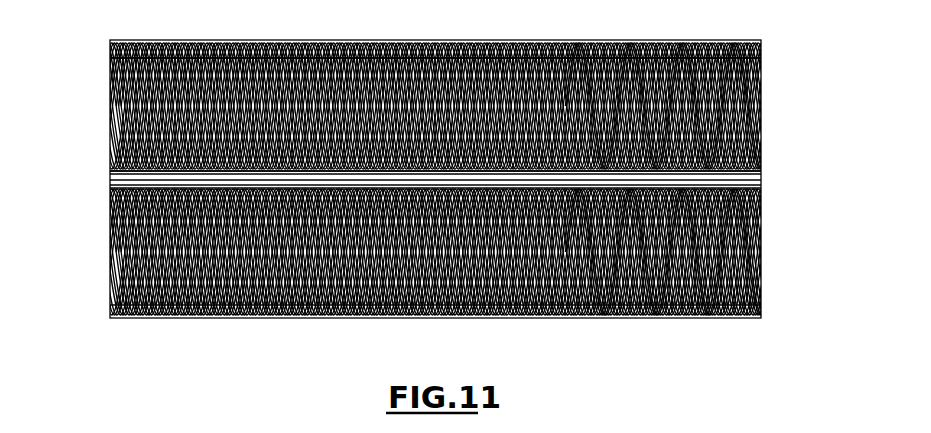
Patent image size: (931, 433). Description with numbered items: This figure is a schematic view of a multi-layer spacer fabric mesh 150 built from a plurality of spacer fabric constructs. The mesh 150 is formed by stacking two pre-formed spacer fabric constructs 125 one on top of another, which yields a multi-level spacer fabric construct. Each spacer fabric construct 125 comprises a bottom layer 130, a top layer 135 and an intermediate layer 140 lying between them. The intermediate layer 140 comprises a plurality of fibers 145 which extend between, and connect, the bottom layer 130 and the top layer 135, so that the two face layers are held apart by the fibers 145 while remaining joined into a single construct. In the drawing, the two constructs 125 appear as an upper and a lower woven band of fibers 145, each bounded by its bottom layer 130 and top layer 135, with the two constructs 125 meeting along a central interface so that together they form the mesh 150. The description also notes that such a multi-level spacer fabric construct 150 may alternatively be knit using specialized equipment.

The spacer fabric construct 125 is at (106, 109).
The bottom layer 130 is at (329, 182).
The top layer 135 is at (496, 174).
The intermediate layer 140 is at (765, 109).
The fibers 145 is at (603, 91).
The mesh 150 is at (120, 372).